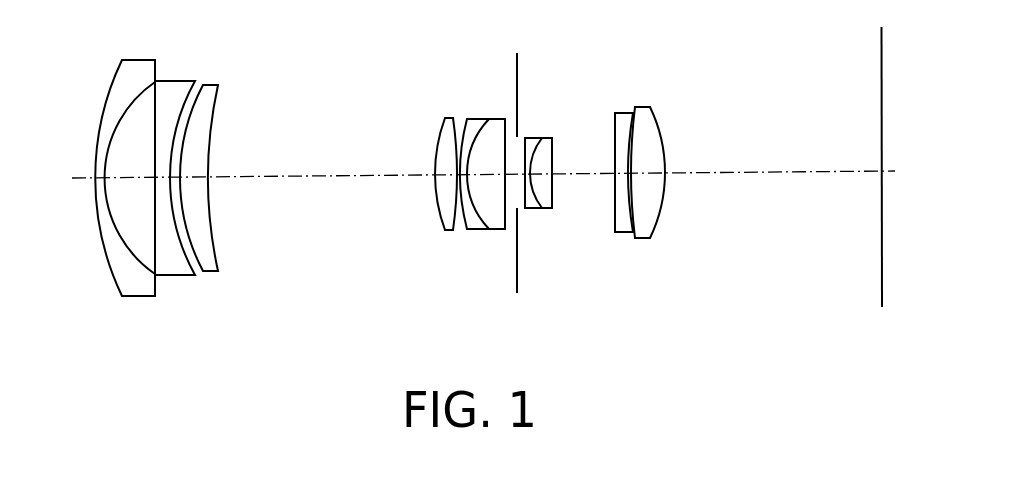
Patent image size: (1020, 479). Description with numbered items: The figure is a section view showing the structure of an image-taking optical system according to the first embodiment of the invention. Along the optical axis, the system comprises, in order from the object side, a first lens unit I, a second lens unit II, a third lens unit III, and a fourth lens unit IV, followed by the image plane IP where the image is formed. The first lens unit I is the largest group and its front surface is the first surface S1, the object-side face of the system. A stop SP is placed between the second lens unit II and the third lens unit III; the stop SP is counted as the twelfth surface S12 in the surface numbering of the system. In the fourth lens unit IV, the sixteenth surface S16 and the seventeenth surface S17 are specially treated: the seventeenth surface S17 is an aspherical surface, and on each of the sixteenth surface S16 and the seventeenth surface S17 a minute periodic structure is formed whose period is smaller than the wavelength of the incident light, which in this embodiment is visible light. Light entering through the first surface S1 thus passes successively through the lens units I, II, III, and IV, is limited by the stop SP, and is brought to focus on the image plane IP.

The first lens unit I is at (145, 213).
The second lens unit II is at (510, 243).
The third lens unit III is at (575, 225).
The fourth lens unit IV is at (611, 181).
The first lens surface S1 is at (106, 102).
The stop SP is at (517, 77).
The stop surface S12 is at (593, 158).
The 16th surface S16 is at (615, 132).
The 17th surface S17 is at (633, 113).
The image plane IP is at (882, 77).